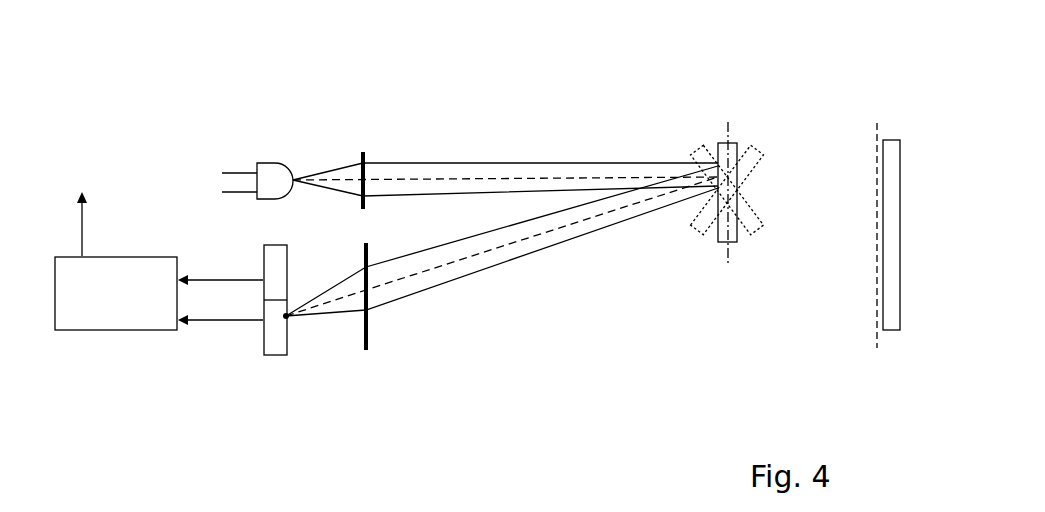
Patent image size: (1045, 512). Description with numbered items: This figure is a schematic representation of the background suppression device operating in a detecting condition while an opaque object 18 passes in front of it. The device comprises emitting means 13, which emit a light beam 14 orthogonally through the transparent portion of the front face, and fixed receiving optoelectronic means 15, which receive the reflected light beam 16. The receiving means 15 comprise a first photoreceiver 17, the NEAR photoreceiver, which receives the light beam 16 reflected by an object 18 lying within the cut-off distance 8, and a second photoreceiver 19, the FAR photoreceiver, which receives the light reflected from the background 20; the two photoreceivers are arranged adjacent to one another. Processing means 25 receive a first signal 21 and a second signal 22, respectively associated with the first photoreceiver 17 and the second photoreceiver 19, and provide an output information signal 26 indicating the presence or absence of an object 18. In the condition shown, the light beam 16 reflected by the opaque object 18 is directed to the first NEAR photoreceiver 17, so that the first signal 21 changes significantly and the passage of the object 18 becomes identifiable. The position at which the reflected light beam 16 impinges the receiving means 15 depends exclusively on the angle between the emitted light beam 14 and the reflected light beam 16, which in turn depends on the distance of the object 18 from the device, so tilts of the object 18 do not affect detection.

The cut-off distance 8 is at (882, 312).
The emitting means 13 is at (210, 166).
The light beam 14 is at (535, 185).
The receiving optoelectronic means 15 is at (281, 372).
The reflected light beam 16 is at (478, 260).
The first photoreceiver 17 is at (278, 340).
The object 18 is at (740, 130).
The second photoreceiver 19 is at (275, 285).
The background 20 is at (910, 172).
The first signal 21 is at (212, 325).
The second signal 22 is at (208, 283).
The processing means 25 is at (85, 332).
The output information signal 26 is at (82, 220).